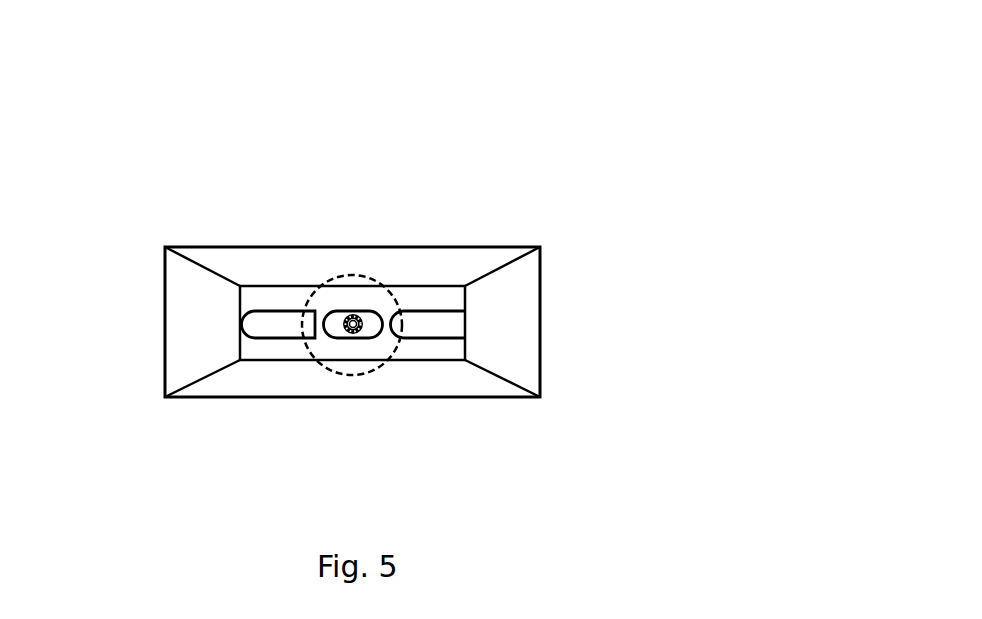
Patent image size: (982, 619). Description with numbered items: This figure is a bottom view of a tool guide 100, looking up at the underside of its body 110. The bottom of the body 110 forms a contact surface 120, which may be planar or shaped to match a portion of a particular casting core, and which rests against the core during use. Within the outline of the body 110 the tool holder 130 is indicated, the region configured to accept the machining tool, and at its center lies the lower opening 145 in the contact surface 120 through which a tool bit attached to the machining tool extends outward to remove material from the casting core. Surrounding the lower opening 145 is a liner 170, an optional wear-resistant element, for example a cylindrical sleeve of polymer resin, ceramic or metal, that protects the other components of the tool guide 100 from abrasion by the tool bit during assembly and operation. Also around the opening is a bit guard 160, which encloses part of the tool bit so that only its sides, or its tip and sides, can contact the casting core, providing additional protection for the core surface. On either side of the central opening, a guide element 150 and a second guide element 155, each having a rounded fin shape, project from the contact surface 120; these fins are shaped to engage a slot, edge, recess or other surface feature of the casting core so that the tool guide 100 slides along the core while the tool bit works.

The tool guide 100 is at (666, 164).
The body 110 is at (480, 247).
The contact surface 120 is at (452, 300).
The tool holder 130 is at (352, 275).
The lower opening 145 is at (353, 334).
The guide element 150 is at (240, 325).
The second guide element 155 is at (427, 338).
The bit guard 160 is at (333, 312).
The liner 170 is at (358, 315).